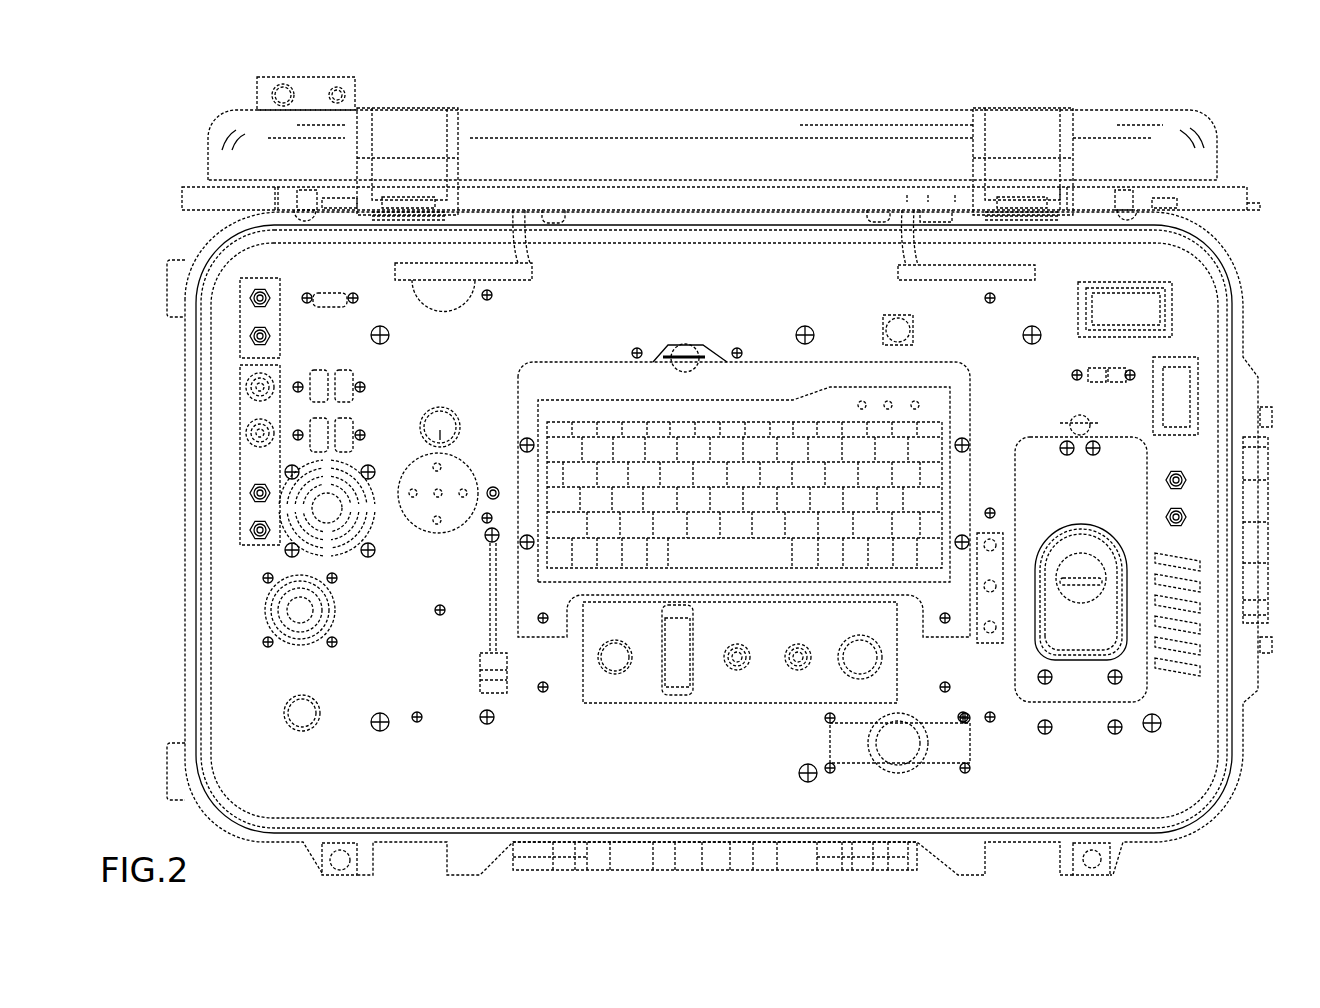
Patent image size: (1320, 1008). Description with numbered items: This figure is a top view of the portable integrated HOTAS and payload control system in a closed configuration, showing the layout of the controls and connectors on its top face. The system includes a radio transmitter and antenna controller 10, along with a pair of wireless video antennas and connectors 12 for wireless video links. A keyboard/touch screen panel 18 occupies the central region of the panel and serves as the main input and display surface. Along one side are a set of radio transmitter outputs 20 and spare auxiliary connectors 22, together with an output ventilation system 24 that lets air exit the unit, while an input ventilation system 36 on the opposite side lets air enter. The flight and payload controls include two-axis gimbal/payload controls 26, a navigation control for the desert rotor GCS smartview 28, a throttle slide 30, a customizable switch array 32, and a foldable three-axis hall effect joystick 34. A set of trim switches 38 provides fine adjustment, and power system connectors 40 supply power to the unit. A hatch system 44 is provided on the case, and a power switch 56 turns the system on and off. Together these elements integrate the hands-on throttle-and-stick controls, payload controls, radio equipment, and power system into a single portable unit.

The radio transmitter and antenna controller 10 is at (258, 109).
The wireless video antennas and connectors 12 is at (520, 278).
The keyboard/touch screen panel 18 is at (596, 412).
The set of radio transmitter outputs 20 is at (242, 345).
The spare auxiliary connectors 22 is at (240, 390).
The output ventilation system 24 is at (287, 538).
The two-axis gimbal/payload controls 26 is at (288, 645).
The navigation for desert rotor GCS smartview 28 is at (458, 460).
The throttle slide 30 is at (478, 663).
The customizable switch array 32 is at (657, 703).
The foldable three-axis hall effect joystick 34 is at (1092, 647).
The input ventilation system 36 is at (1196, 673).
The set of trim switches 38 is at (1003, 557).
The power system connectors 40 is at (1097, 383).
The hatch system 44 is at (687, 345).
The power switch 56 is at (1190, 357).